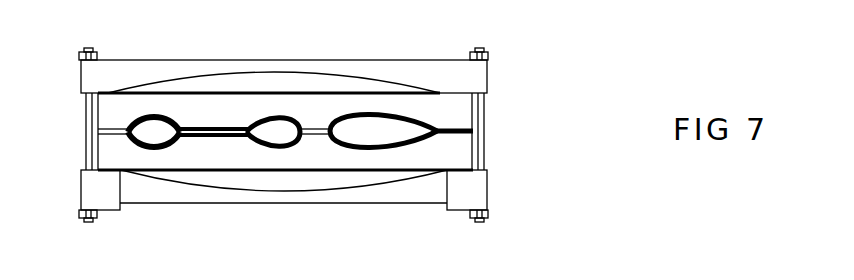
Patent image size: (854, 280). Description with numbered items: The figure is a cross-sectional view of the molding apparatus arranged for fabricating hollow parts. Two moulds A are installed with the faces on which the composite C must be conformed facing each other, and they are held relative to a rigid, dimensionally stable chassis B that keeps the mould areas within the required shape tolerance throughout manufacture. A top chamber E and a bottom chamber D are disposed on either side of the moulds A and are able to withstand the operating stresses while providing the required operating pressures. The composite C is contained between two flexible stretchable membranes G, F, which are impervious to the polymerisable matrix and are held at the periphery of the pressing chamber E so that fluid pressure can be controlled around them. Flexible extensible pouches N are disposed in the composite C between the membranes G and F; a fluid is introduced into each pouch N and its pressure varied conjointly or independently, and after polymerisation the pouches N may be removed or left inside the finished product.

The flexible extensible pouches N is at (313, 115).
The top chamber E is at (465, 71).
The composite C is at (346, 102).
The mould A is at (568, 152).
The rigid chassis B is at (465, 193).
The bottom chamber D is at (358, 206).
The flexible stretchable membrane F is at (105, 91).
The flexible stretchable membrane G is at (105, 170).